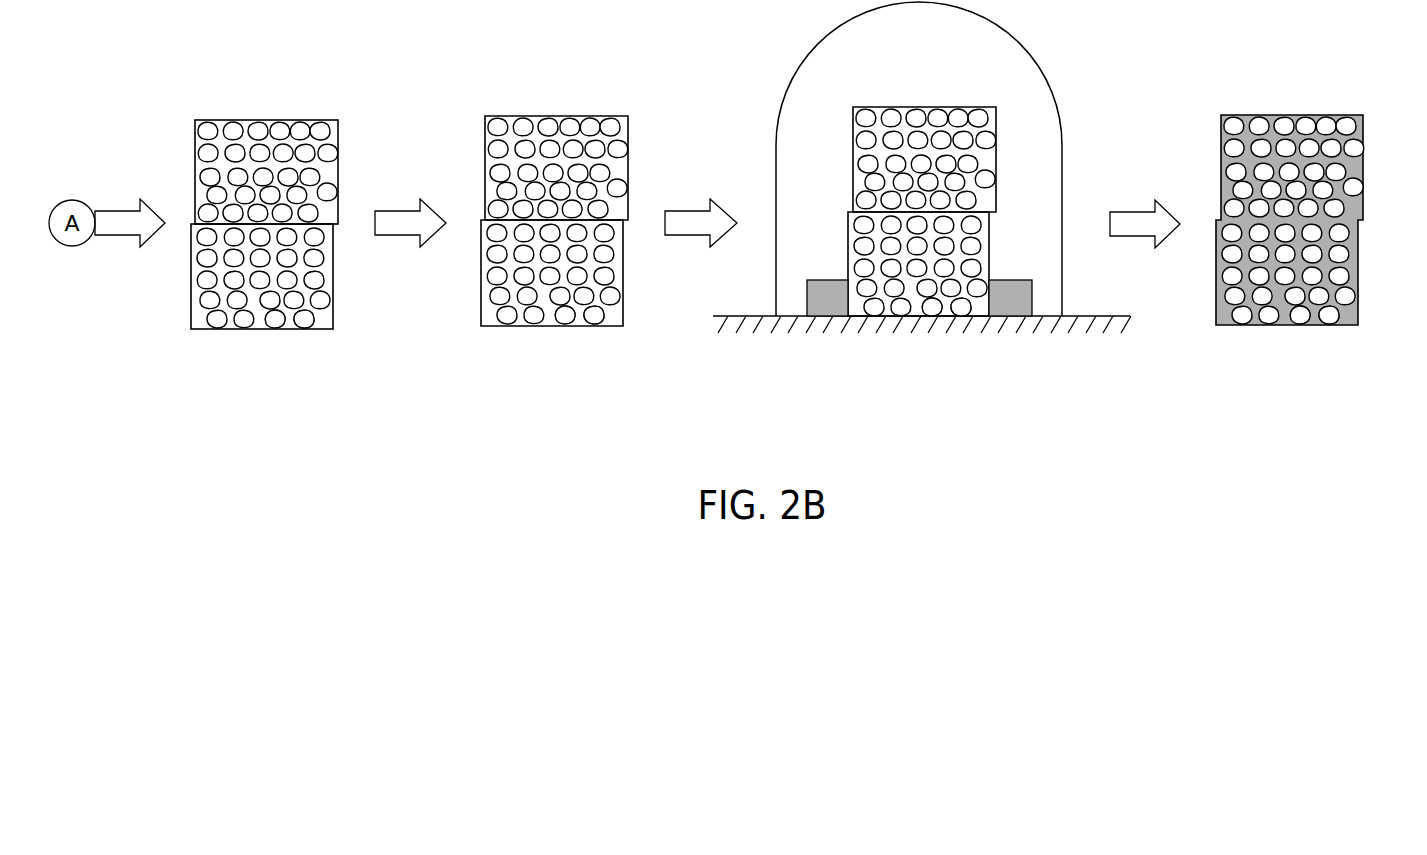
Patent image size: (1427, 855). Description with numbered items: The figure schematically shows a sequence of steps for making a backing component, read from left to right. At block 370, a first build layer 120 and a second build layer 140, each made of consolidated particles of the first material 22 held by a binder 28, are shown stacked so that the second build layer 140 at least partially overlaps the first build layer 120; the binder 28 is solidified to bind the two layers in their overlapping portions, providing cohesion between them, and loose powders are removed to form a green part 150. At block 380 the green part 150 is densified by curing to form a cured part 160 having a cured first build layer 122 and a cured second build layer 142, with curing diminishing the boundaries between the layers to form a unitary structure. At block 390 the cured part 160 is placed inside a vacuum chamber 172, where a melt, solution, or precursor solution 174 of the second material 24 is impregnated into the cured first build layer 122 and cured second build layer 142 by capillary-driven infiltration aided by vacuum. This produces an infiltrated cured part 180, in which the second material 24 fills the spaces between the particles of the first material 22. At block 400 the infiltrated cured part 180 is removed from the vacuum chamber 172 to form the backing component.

The first material 22 is at (275, 321).
The second material 24 is at (1362, 315).
The binder 28 is at (285, 326).
The first build layer 120 is at (203, 336).
The cured first build layer 122 is at (493, 333).
The second build layer 140 is at (200, 111).
The cured second build layer 142 is at (495, 112).
The green part 150 is at (265, 211).
The cured part 160 is at (707, 207).
The vacuum chamber 172 is at (1065, 110).
The precursor solution 174 is at (1010, 278).
The infiltrated cured part 180 is at (1319, 187).
The block 370 is at (118, 208).
The block 380 is at (400, 210).
The block 390 is at (690, 208).
The block 400 is at (1132, 210).